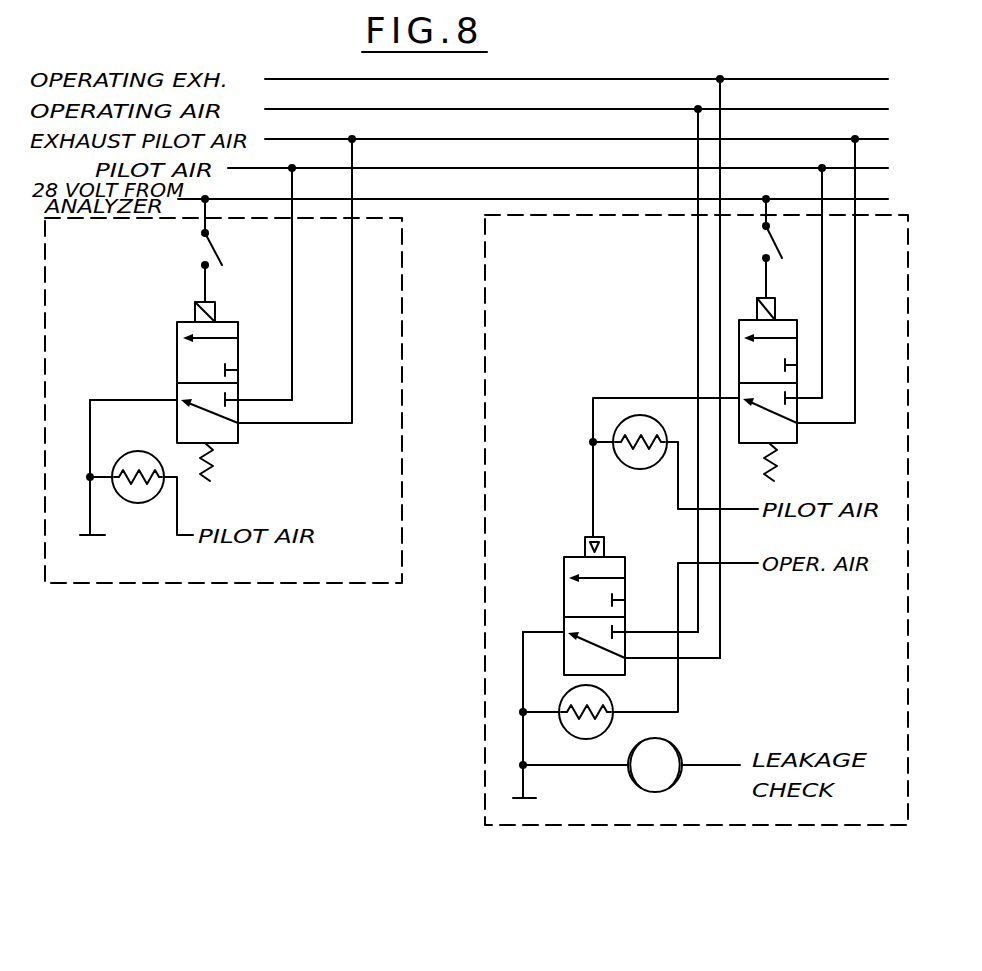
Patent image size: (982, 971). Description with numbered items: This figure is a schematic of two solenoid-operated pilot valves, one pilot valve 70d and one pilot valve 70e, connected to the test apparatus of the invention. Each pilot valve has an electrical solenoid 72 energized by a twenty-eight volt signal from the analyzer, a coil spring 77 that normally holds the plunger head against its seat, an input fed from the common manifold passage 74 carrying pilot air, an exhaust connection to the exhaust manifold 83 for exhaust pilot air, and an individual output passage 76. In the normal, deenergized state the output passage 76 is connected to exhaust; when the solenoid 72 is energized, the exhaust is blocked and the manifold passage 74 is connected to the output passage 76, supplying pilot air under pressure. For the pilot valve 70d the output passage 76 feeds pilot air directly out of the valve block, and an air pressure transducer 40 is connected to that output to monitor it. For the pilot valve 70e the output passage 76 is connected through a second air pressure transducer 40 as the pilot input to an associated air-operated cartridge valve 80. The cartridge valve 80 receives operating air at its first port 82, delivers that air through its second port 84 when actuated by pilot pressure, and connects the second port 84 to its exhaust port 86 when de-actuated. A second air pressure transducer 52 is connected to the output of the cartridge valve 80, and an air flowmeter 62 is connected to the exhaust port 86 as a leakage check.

The air pressure transducer 40 is at (142, 495).
The second air pressure transducer 52 is at (583, 737).
The air flowmeter 62 is at (672, 748).
The solenoid pilot valve 70d is at (170, 351).
The solenoid pilot valve 70e is at (732, 352).
The electrical solenoid 72 is at (195, 310).
The common manifold passage 74 is at (292, 303).
The output passage 76 is at (122, 392).
The coil spring 77 is at (212, 463).
The air-operated cartridge valve 80 is at (552, 600).
The first port 82 is at (646, 630).
The exhaust manifold 83 is at (352, 368).
The second port 84 is at (548, 637).
The exhaust port 86 is at (656, 661).